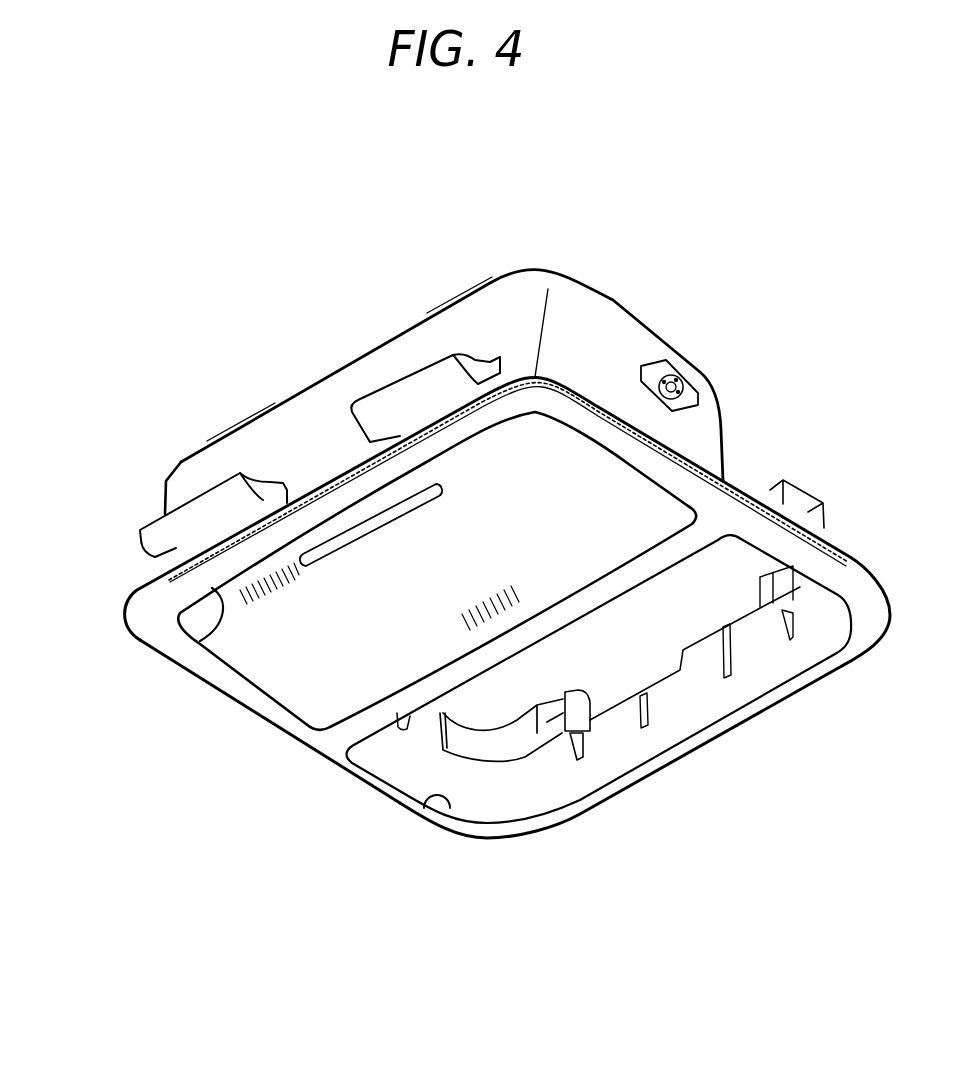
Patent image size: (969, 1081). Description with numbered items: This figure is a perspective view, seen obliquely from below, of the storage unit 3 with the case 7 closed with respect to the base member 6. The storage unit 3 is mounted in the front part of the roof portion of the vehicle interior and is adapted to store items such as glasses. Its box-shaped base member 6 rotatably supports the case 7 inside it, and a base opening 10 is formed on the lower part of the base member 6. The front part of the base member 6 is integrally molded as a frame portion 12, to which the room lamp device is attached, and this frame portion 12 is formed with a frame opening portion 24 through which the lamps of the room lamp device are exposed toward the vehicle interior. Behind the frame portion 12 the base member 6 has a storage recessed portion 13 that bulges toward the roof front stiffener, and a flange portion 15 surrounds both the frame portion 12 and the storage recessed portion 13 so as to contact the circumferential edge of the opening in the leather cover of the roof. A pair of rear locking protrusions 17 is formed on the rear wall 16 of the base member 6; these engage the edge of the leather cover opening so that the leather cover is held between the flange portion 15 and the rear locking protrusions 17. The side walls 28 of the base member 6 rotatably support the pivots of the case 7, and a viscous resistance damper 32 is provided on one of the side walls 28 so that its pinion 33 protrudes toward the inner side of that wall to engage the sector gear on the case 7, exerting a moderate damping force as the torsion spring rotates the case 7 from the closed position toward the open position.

The storage unit 3 is at (520, 454).
The base member 6 is at (314, 410).
The case 7 is at (236, 680).
The base opening 10 is at (212, 590).
The frame portion 12 is at (507, 800).
The storage recessed portion 13 is at (530, 303).
The flange portion 15 is at (304, 738).
The rear wall 16 is at (207, 467).
The rear locking protrusions 17 is at (397, 383).
The frame opening portion 24 is at (449, 810).
The side walls 28 is at (633, 340).
The viscous resistance damper 32 is at (680, 366).
The pinion 33 is at (695, 384).